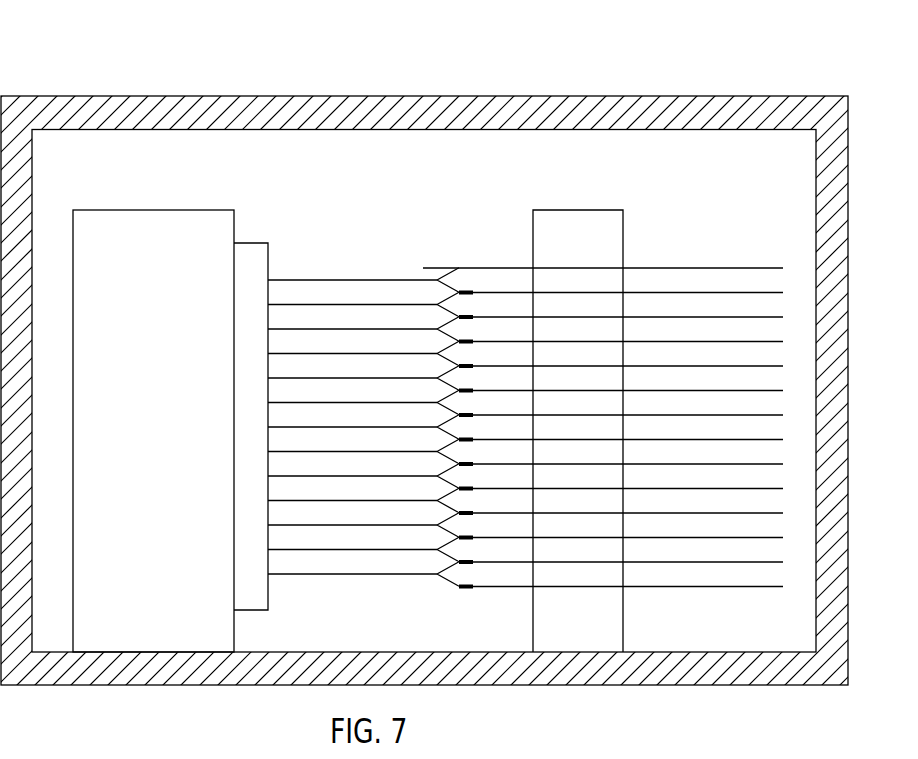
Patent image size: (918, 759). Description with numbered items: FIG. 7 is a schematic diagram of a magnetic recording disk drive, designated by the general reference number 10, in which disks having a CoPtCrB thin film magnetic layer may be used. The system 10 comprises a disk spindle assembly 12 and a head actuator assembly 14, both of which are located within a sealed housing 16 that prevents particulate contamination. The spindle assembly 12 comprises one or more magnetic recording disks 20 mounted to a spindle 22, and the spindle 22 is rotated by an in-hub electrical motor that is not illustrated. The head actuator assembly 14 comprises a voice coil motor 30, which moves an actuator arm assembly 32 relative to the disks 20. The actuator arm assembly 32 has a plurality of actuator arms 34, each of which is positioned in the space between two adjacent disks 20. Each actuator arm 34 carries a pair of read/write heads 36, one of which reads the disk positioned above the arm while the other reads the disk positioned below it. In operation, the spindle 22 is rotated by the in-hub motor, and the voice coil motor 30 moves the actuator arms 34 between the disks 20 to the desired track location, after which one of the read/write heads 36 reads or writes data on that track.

The magnetic recording disk drive 10 is at (459, 395).
The disk spindle assembly 12 is at (595, 347).
The head actuator assembly 14 is at (184, 347).
The sealed housing 16 is at (378, 97).
The magnetic recording disks 20 is at (498, 268).
The spindle 22 is at (558, 177).
The voice coil motor 30 is at (153, 431).
The actuator arm assembly 32 is at (264, 394).
The actuator arms 34 is at (335, 280).
The read/write heads 36 is at (462, 268).